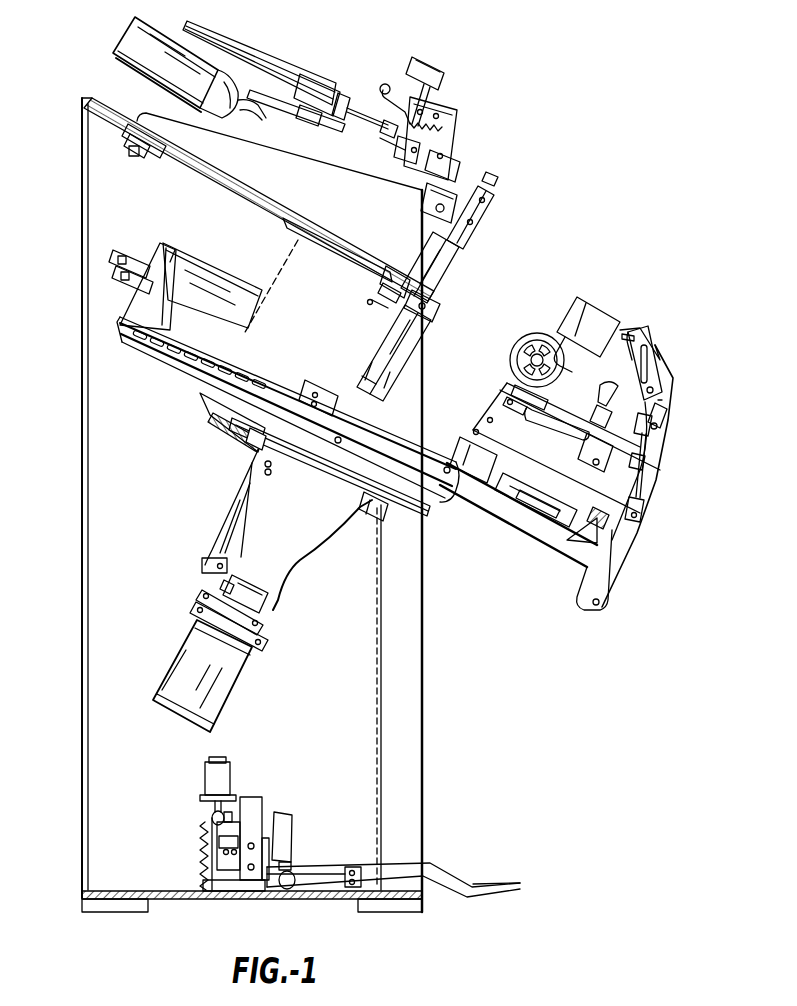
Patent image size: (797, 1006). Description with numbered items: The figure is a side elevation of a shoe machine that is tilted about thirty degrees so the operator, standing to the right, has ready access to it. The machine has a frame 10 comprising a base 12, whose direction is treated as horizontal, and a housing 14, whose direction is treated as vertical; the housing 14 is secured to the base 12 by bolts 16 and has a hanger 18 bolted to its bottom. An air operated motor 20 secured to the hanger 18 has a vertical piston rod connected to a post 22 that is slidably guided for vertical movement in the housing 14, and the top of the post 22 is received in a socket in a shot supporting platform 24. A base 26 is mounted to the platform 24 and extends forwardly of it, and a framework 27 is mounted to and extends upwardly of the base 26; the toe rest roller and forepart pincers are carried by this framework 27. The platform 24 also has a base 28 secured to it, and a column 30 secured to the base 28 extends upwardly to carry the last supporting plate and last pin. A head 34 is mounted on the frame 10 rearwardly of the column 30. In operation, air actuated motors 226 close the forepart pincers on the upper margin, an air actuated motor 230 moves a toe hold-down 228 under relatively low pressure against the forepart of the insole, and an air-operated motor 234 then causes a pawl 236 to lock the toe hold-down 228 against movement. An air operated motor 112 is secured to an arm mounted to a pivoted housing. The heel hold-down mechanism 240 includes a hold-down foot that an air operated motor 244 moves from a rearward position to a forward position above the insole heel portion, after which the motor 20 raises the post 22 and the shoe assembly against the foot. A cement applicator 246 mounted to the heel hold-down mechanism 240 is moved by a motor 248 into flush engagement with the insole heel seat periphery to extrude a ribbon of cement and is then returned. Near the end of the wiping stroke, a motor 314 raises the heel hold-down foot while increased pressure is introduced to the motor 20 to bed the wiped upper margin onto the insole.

The frame 10 is at (82, 546).
The base 12 is at (232, 428).
The housing 14 is at (308, 534).
The bolts 16 is at (383, 498).
The hanger 18 is at (268, 632).
The air operated motor 20 is at (222, 668).
The post 22 is at (328, 470).
The shot supporting platform 24 is at (248, 384).
The base 26 is at (473, 493).
The framework 27 is at (690, 366).
The base 28 is at (374, 378).
The column 30 is at (407, 347).
The head 34 is at (295, 188).
The air operated motor 112 is at (450, 279).
The air actuated motors 226 is at (577, 369).
The toe hold-down 228 is at (630, 340).
The air actuated motor 230 is at (612, 514).
The air-operated motor 234 is at (640, 483).
The pawl 236 is at (668, 415).
The heel hold-down mechanism 240 is at (470, 148).
The air operated motor 244 is at (210, 42).
The cement applicator 246 is at (443, 193).
The motor 248 is at (412, 60).
The motor 314 is at (300, 76).